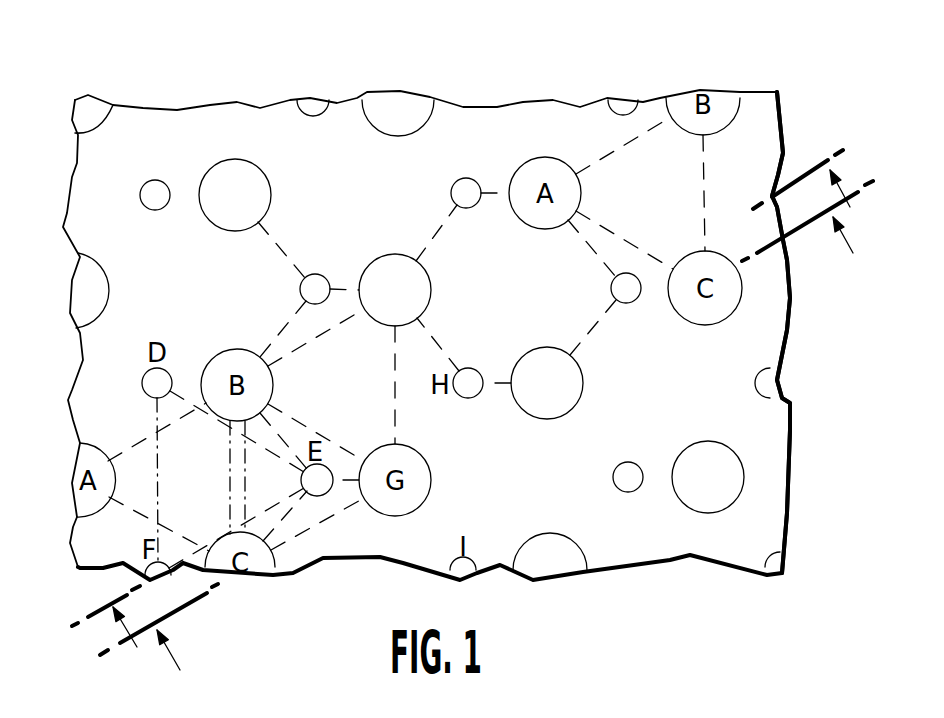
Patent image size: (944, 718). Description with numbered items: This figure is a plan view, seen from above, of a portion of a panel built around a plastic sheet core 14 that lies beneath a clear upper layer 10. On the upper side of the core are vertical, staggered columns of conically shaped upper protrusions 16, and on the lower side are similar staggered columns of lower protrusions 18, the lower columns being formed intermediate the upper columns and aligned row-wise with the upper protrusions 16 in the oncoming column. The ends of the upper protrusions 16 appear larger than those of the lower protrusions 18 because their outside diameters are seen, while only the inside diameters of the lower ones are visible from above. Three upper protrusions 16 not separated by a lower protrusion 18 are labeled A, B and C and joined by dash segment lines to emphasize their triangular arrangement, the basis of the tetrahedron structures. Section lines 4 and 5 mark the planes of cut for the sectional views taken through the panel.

The upper clear layer 10 is at (552, 120).
The core 14 is at (815, 437).
The upper protrusions 16 is at (380, 267).
The lower protrusions 18 is at (140, 195).
The section line 4- 4 is at (486, 425).
The section line 5- 5 is at (461, 389).